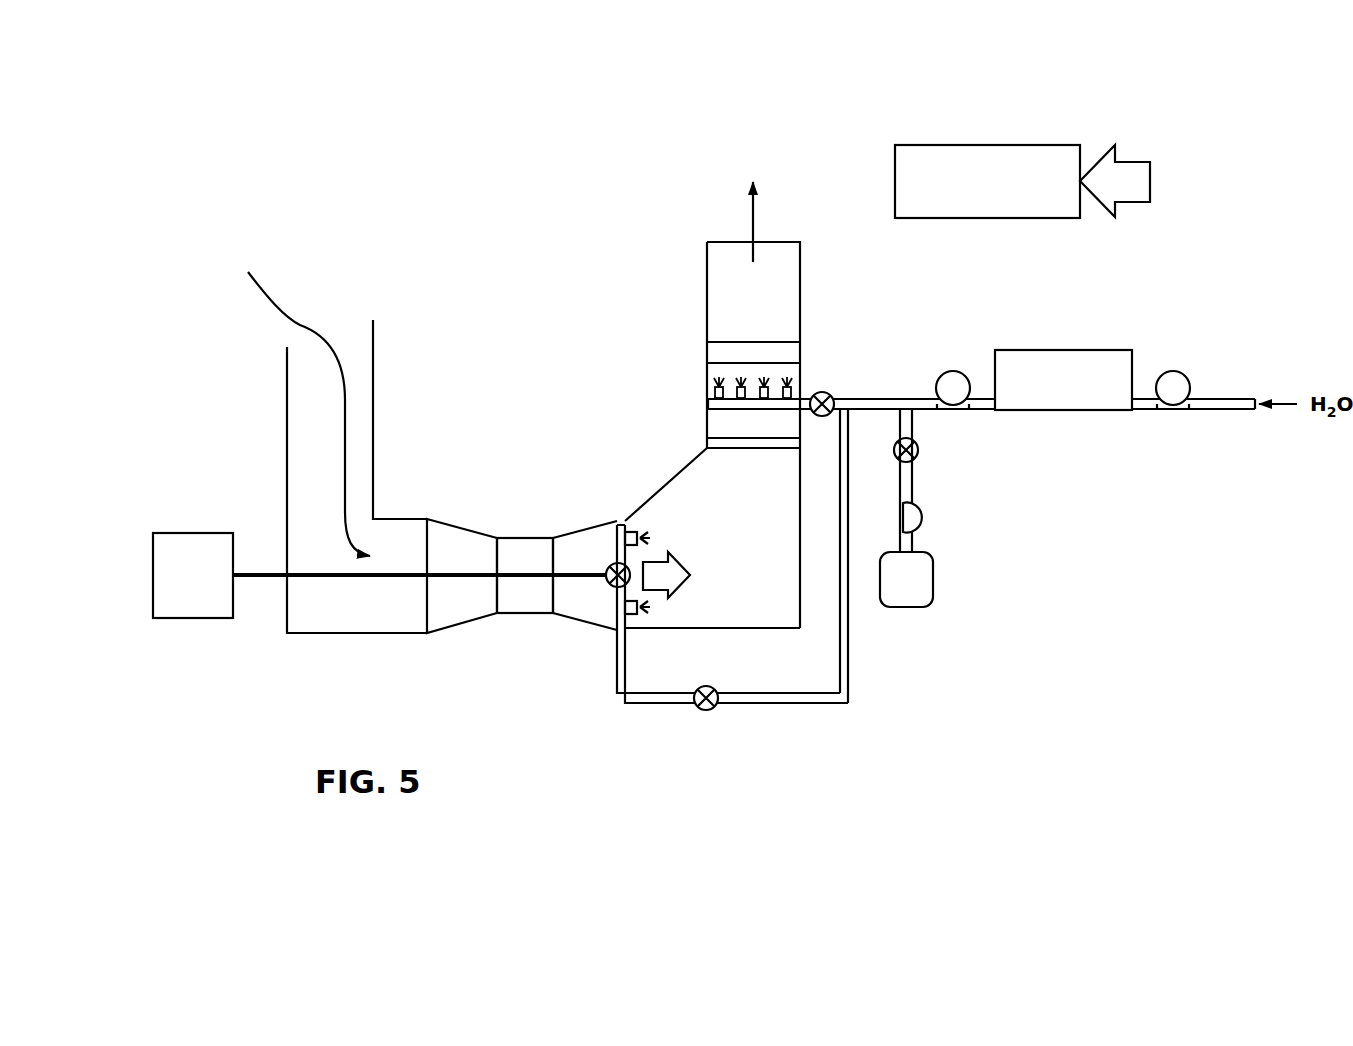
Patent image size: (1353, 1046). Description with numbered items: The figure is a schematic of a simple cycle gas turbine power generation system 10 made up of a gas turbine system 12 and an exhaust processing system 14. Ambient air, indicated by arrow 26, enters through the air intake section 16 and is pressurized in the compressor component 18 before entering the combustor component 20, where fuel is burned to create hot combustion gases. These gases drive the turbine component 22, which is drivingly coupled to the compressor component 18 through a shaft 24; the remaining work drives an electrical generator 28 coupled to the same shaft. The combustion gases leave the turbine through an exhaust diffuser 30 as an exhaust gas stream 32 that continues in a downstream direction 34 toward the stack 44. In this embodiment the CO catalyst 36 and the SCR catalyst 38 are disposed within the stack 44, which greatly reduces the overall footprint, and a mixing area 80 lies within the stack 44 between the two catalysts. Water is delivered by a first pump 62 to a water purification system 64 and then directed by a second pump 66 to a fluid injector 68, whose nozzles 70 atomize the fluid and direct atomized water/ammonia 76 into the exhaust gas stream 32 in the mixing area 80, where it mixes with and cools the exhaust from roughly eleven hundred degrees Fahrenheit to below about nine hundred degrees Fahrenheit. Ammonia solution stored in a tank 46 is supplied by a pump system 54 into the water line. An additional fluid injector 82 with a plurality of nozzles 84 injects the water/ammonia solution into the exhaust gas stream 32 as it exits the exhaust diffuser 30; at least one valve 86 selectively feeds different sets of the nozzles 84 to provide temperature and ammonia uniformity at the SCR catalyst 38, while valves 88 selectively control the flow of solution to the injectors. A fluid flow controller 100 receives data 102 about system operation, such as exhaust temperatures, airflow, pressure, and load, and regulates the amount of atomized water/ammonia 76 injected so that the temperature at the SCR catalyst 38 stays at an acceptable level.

The simple cycle gas turbine power generation system 10 is at (489, 322).
The gas turbine system 12 is at (522, 594).
The exhaust processing system 14 is at (623, 278).
The air intake section 16 is at (284, 412).
The compressor component 18 is at (462, 576).
The combustor component 20 is at (525, 575).
The turbine component 22 is at (585, 575).
The shaft 24 is at (276, 582).
The arrow (entering air) 26 is at (293, 323).
The electrical generator 28 is at (186, 621).
The exhaust diffuser 30 is at (628, 630).
The exhaust gas stream 32 is at (666, 575).
The downstream direction 34 is at (732, 617).
The CO catalyst 36 is at (707, 441).
The SCR catalyst 38 is at (707, 347).
The stack 44 is at (753, 405).
The tank 46 is at (936, 600).
The pump system 54 is at (936, 524).
The first pump 62 is at (1128, 412).
The water purification system 64 is at (1043, 412).
The second pump 66 is at (926, 400).
The fluid injector 68 is at (713, 410).
The nozzles 70 is at (712, 397).
The atomized water/ammonia 76 is at (711, 380).
The mixing area 80 is at (753, 424).
The additional fluid injector 82 is at (611, 529).
The nozzles 84 is at (630, 528).
The valve 86 is at (606, 581).
The valves 88 is at (831, 393).
The fluid flow controller 100 is at (987, 181).
The data 102 is at (1135, 160).